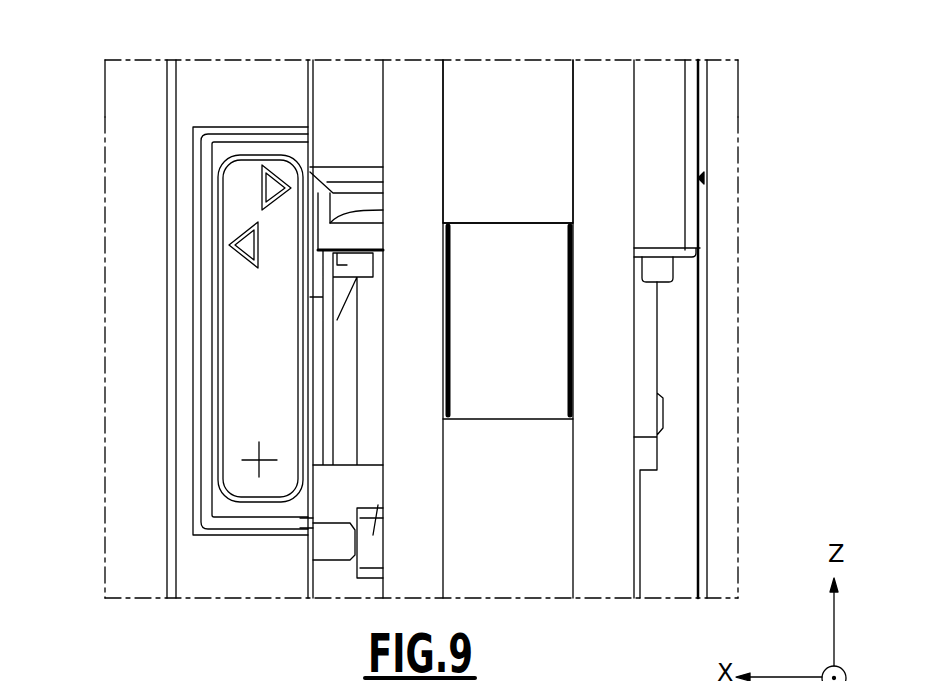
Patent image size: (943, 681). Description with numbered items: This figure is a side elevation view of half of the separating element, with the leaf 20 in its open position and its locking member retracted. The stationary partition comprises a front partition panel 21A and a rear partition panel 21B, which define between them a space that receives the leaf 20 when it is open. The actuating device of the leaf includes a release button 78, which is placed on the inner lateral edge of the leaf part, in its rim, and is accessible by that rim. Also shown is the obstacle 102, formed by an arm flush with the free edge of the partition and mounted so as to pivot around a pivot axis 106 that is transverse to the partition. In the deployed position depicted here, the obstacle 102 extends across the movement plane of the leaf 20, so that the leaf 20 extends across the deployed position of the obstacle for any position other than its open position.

The leaf 20 is at (530, 76).
The front partition panel 21A is at (208, 99).
The rear partition panel 21B is at (718, 302).
The release button 78 is at (520, 440).
The obstacle 102 is at (245, 322).
The pivot axis 106 is at (255, 461).